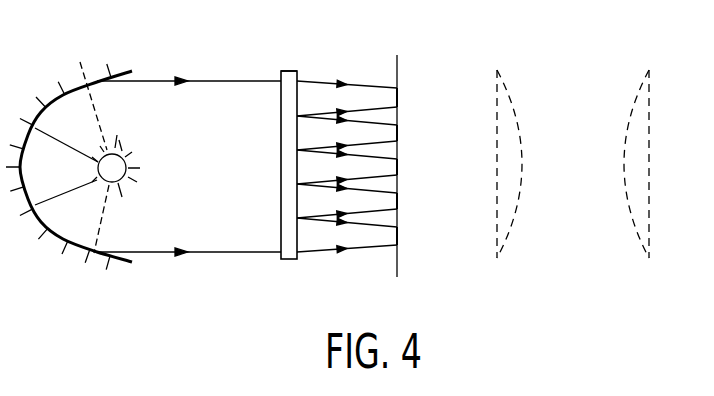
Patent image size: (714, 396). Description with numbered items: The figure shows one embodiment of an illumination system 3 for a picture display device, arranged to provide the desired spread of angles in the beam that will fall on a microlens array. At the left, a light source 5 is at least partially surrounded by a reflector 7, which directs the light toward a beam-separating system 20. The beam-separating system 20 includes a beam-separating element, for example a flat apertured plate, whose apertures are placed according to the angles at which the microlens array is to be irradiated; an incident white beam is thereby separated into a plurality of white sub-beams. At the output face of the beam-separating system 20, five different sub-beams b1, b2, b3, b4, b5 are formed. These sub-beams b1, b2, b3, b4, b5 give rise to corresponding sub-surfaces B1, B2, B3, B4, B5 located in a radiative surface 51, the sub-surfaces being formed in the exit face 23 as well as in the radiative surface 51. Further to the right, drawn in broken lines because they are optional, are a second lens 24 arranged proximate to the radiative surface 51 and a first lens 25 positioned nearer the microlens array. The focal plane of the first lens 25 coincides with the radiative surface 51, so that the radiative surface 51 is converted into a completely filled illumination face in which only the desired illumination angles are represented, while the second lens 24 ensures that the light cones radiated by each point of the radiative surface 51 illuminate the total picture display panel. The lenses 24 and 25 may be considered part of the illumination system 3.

The illumination system 3 is at (73, 197).
The light source 5 is at (112, 163).
The reflector 7 is at (73, 90).
The beam-separating system 20 is at (287, 258).
The exit face 23 is at (298, 72).
The second lens 24 is at (513, 235).
The first lens 25 is at (637, 235).
The radiative surface 51 is at (398, 254).
The sub-beam b1 is at (350, 97).
The sub-beam b2 is at (377, 130).
The sub-beam b3 is at (377, 164).
The sub-beam b4 is at (377, 198).
The sub-beam b5 is at (358, 236).
The sub-surface B1 is at (398, 91).
The sub-surface B2 is at (398, 127).
The sub-surface B3 is at (398, 162).
The sub-surface B4 is at (398, 197).
The sub-surface B5 is at (398, 231).